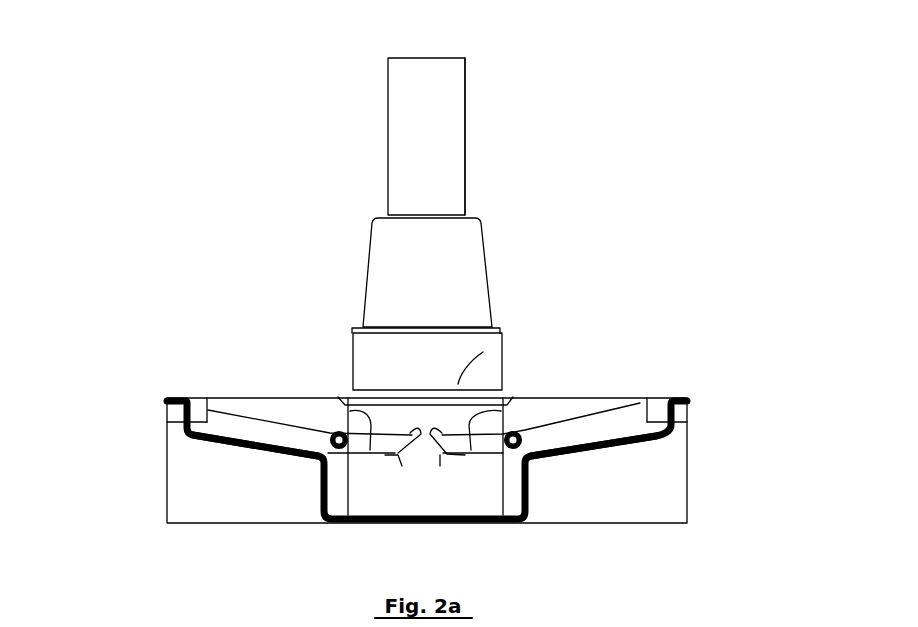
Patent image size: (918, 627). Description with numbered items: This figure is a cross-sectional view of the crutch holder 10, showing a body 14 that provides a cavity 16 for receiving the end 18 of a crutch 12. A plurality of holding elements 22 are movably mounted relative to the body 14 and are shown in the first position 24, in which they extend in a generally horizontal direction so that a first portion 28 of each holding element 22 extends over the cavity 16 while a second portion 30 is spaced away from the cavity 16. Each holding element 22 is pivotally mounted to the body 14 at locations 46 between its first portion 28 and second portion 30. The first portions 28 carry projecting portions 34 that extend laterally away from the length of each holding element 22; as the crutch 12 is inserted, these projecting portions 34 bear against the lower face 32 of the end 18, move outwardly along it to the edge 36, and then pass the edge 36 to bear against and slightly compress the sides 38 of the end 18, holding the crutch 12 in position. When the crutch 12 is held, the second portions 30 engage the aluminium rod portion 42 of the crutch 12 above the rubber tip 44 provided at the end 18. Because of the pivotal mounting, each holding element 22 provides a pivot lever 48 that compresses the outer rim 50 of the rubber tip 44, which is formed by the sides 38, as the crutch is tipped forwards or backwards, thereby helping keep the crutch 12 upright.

The crutch holder 10 is at (597, 146).
The crutch 12 is at (405, 183).
The body 14 is at (175, 515).
The cavity 16 is at (402, 517).
The end 18 is at (529, 309).
The holding elements 22 is at (217, 425).
The first position 24 is at (275, 392).
The first portion 28 is at (348, 419).
The second portion 30 is at (167, 423).
The lower face 32 is at (483, 352).
The projecting portions 34 is at (398, 455).
The edge 36 is at (353, 385).
The sides 38 is at (353, 367).
The aluminium rod portion 42 is at (455, 132).
The rubber tip 44 is at (477, 286).
The locations 46 is at (342, 470).
The pivot lever 48 is at (262, 430).
The outer rim 50 is at (505, 373).